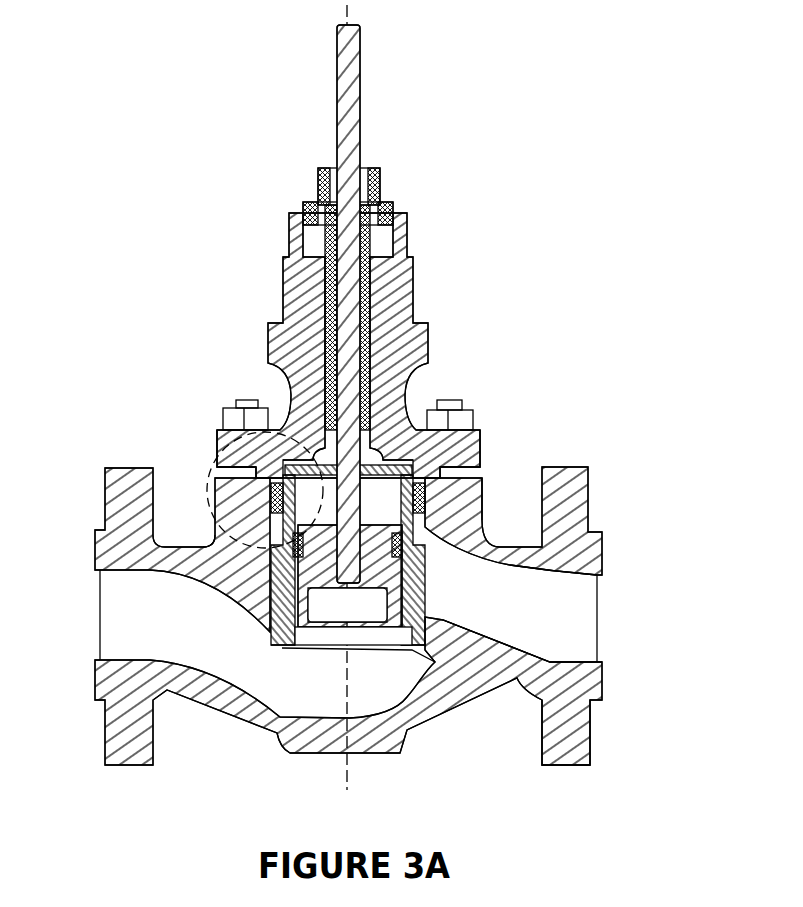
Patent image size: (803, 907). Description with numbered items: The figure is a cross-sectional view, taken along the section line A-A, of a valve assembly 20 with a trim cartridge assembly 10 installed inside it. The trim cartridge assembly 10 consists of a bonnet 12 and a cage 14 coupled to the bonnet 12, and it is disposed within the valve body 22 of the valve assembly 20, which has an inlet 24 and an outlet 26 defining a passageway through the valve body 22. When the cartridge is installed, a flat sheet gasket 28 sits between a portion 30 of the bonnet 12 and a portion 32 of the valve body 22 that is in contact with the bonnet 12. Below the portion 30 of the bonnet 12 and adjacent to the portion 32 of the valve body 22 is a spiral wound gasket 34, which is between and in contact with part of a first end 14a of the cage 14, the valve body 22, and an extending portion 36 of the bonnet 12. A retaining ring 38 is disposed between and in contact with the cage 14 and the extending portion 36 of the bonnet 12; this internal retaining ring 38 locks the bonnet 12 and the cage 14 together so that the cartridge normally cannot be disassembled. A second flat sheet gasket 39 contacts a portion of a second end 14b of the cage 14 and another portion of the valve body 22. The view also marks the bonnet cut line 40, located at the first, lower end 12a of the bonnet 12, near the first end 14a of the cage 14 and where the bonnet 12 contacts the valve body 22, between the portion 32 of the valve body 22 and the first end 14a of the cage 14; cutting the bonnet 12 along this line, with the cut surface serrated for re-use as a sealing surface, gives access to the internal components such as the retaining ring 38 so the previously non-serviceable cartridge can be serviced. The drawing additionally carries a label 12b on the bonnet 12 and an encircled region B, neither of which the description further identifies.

The trim cartridge assembly 10 is at (367, 323).
The bonnet 12 is at (420, 347).
The first end of the bonnet 12a is at (425, 478).
The packing flange 12b is at (402, 228).
The cage 14 is at (301, 575).
The first end of the cage 14a is at (272, 492).
The second end of the cage 14b is at (268, 637).
The valve assembly 20 is at (386, 614).
The valve body 22 is at (577, 737).
The inlet 24 is at (577, 620).
The outlet 26 is at (118, 608).
The flat sheet gasket 28 is at (217, 433).
The portion of the bonnet 30 is at (263, 477).
The portion of the valve body 32 is at (217, 467).
The spiral wound gasket 34 is at (235, 528).
The extending portion of the bonnet 36 is at (279, 477).
The retaining ring 38 is at (478, 478).
The second flat sheet gasket 39 is at (277, 647).
The bonnet cut line 40 is at (477, 442).
The detail region B is at (230, 503).
The section line A- A is at (347, 806).